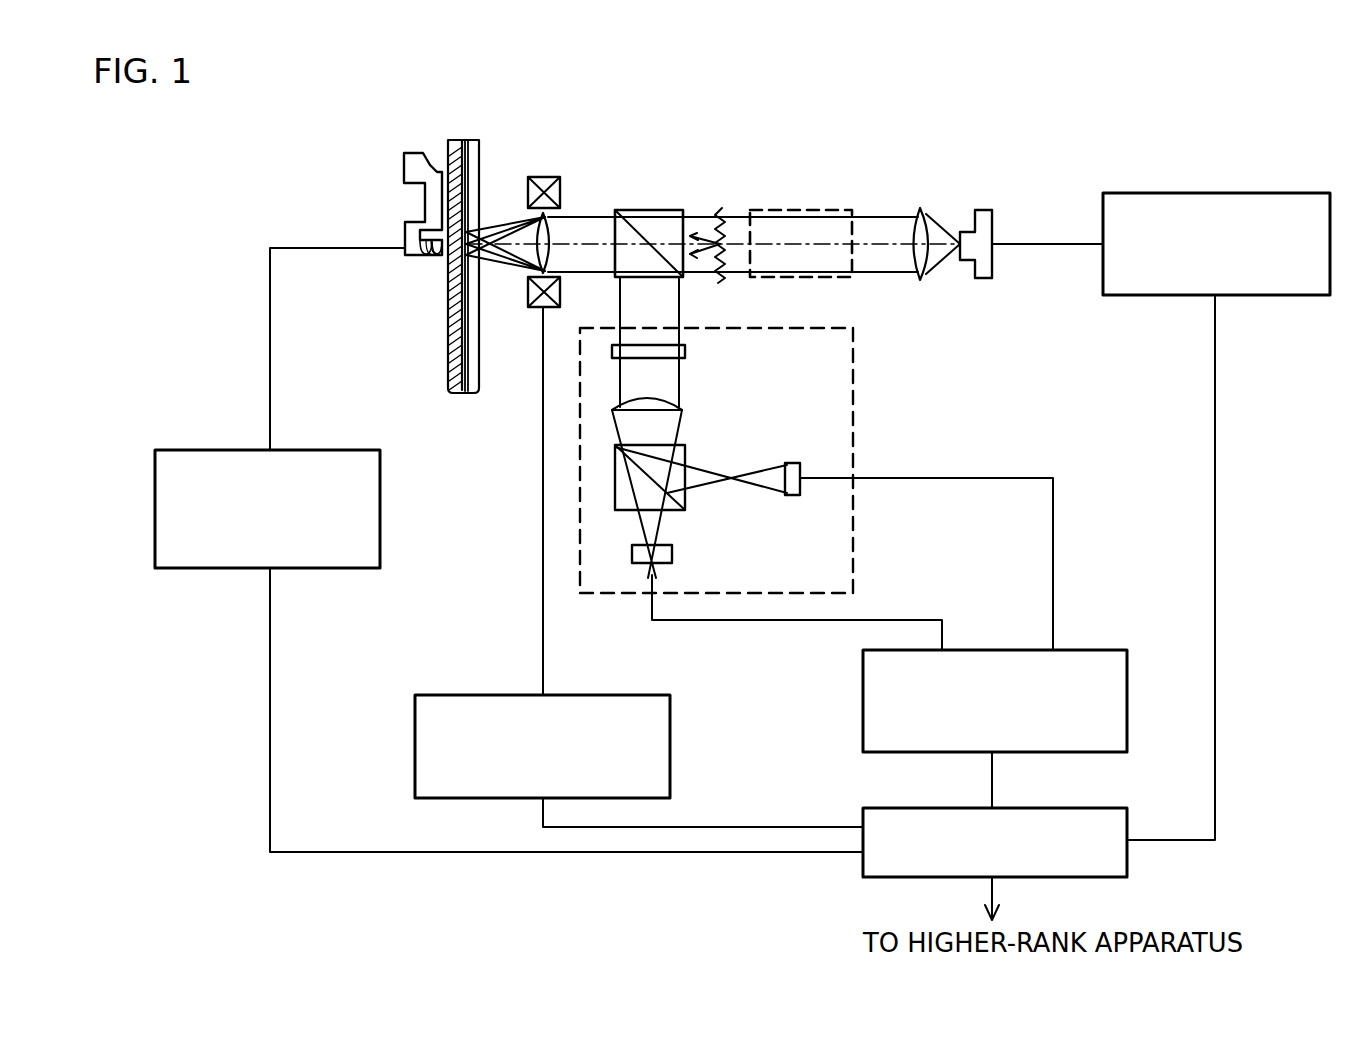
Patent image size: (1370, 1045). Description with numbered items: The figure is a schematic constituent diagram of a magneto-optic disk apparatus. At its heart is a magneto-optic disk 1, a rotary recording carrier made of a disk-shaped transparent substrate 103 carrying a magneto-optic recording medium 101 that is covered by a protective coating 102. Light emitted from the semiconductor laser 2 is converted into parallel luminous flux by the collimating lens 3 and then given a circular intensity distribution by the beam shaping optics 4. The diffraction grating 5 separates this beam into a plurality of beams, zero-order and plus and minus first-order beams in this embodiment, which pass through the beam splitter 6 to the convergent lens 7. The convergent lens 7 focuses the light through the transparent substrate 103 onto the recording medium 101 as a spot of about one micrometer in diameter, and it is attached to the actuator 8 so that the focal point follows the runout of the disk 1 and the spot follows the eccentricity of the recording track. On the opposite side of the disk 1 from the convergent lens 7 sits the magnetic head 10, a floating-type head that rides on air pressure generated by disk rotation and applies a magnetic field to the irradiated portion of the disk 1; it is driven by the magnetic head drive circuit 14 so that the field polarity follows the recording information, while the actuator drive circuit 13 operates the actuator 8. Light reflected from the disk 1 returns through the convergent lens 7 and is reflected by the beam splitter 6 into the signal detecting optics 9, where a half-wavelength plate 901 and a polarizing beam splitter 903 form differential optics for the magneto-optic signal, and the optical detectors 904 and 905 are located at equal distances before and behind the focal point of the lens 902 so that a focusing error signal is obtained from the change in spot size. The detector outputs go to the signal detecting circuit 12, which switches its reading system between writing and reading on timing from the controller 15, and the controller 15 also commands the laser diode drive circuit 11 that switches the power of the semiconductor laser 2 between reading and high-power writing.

The magneto-optic disk 1 is at (525, 90).
The magneto-optic recording medium 101 is at (466, 141).
The protective coating 102 is at (455, 141).
The transparent substrate 103 is at (480, 141).
The magnetic head 10 is at (404, 152).
The actuator 8 is at (548, 177).
The convergent lens 7 is at (549, 225).
The beam splitter 6 is at (645, 210).
The diffraction grating 5 is at (720, 208).
The beam shaping optics 4 is at (795, 210).
The collimating lens 3 is at (920, 208).
The semiconductor laser 2 is at (990, 210).
The laser diode drive circuit 11 is at (1218, 193).
The signal detecting optics 9 is at (580, 504).
The half-wavelength plate 901 is at (685, 352).
The lens 902 is at (685, 408).
The polarizing beam splitter 903 is at (686, 447).
The optical detector 904 is at (672, 553).
The optical detector 905 is at (795, 463).
The magnetic head drive circuit 14 is at (155, 500).
The actuator drive circuit 13 is at (415, 748).
The signal detecting circuit 12 is at (863, 695).
The controller 15 is at (863, 865).